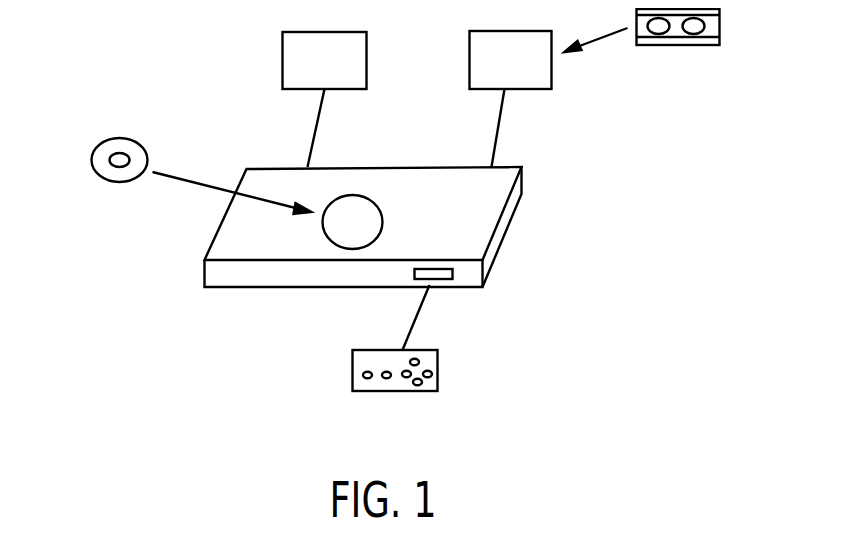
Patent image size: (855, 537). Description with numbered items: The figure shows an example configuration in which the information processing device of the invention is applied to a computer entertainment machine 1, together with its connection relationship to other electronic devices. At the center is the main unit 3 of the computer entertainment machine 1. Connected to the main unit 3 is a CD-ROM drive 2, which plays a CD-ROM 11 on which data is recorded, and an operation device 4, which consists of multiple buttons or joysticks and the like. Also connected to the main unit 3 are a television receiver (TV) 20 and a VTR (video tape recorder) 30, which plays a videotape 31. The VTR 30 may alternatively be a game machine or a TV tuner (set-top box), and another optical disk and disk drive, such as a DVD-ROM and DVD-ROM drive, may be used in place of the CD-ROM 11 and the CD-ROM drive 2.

The computer entertainment machine 1 is at (446, 277).
The CD-ROM drive 2 is at (383, 218).
The main unit 3 is at (228, 285).
The operation device 4 is at (438, 375).
The CD-ROM 11 is at (120, 137).
The television receiver (TV) 20 is at (283, 40).
The VTR (video tape recorder) 30 is at (470, 40).
The videotape 31 is at (662, 43).